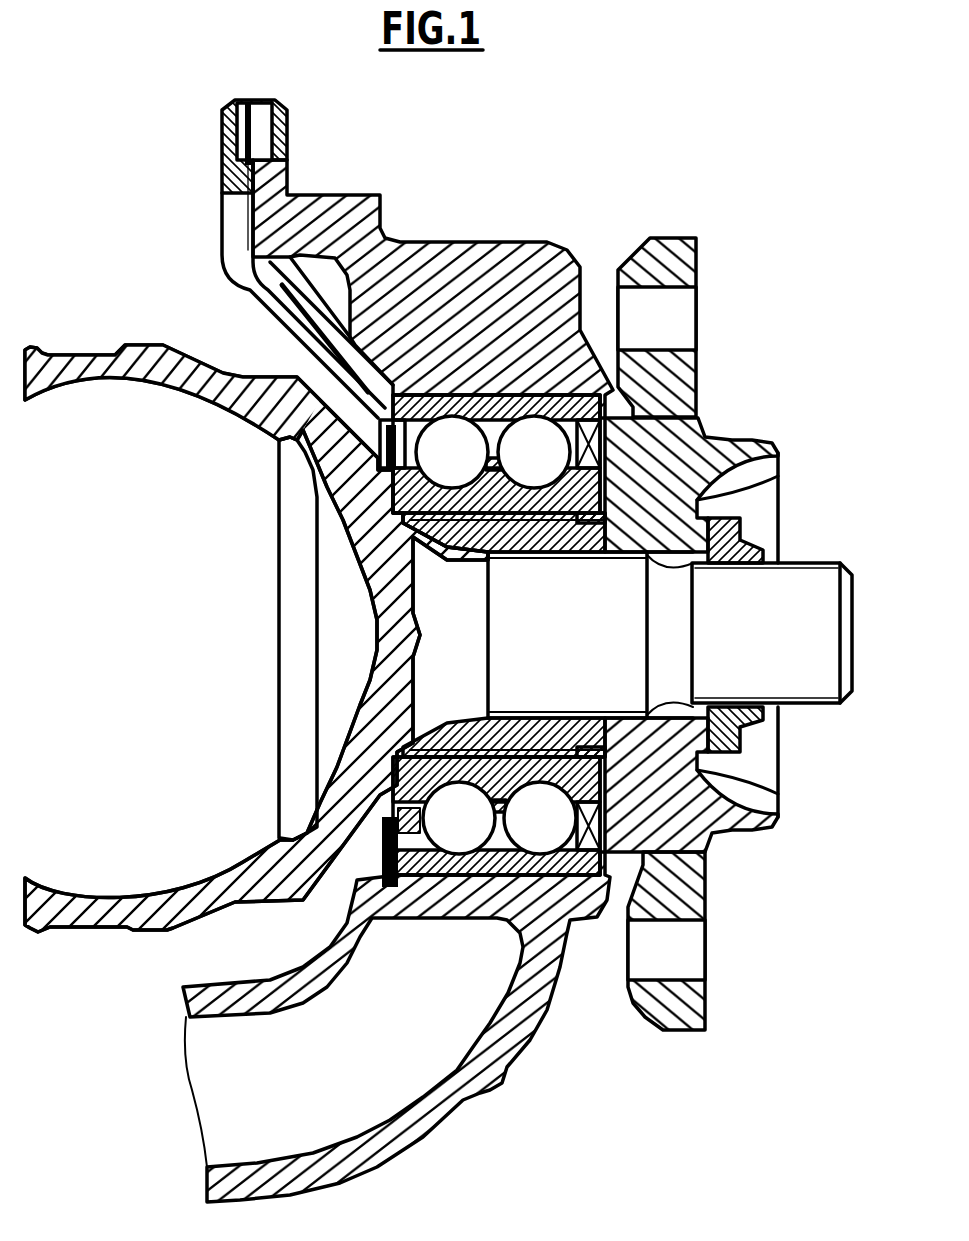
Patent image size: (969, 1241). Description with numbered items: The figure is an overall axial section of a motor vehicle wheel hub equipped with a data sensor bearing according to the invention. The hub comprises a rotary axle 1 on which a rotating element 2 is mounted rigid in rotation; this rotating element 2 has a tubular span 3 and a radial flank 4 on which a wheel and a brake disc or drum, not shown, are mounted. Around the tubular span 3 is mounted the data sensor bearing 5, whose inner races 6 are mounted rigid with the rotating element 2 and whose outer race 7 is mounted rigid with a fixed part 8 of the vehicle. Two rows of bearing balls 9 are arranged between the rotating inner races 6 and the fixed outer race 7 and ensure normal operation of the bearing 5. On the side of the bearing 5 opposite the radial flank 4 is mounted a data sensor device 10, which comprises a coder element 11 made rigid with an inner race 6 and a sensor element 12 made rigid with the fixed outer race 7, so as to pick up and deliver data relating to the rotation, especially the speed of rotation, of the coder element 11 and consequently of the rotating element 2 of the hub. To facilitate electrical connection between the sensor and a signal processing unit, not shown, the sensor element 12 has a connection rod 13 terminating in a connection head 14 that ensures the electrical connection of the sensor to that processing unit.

The rotary axle 1 is at (793, 593).
The rotating element 2 is at (695, 502).
The tubular span 3 is at (563, 522).
The radial flank 4 is at (668, 390).
The data sensor bearing 5 is at (584, 516).
The inner races 6 is at (482, 542).
The outer race 7 is at (560, 390).
The fixed part 8 is at (433, 283).
The bearing balls 9 is at (525, 448).
The data sensor device 10 is at (392, 470).
The coder element 11 is at (455, 448).
The sensor element 12 is at (262, 295).
The connection rod 13 is at (237, 275).
The connection head 14 is at (222, 150).